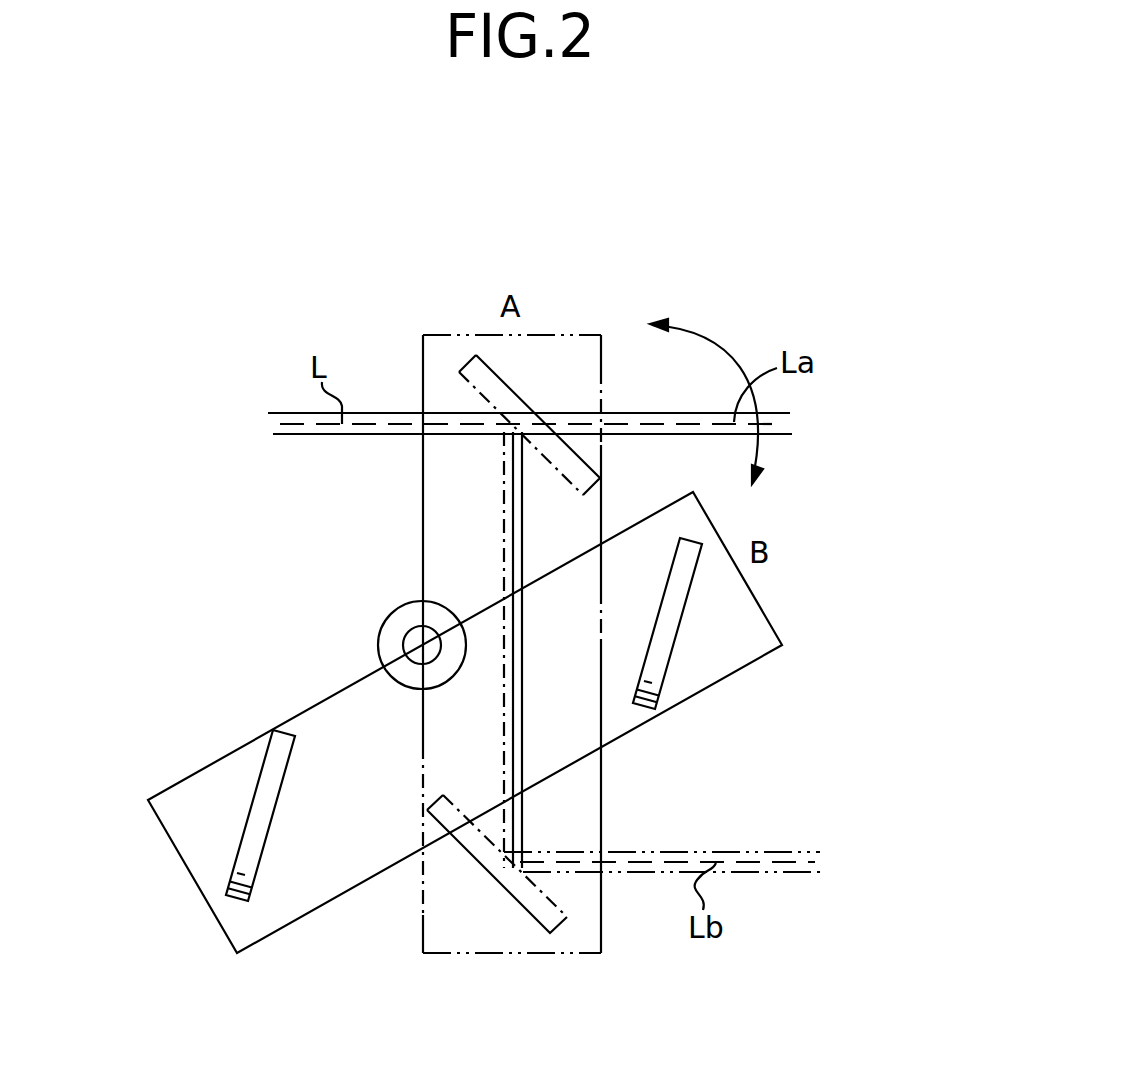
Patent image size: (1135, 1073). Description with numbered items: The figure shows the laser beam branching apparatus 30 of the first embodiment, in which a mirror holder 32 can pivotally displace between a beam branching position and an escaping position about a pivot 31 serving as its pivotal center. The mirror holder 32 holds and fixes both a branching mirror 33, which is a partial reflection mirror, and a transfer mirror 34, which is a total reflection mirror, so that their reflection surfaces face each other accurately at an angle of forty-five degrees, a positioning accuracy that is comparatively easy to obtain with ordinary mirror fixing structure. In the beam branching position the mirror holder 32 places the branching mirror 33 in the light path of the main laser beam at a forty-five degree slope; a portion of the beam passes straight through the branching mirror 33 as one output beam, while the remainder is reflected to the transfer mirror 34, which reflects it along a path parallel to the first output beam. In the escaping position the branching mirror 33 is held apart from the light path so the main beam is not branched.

The laser beam branching apparatus 30 is at (504, 706).
The pivot 31 is at (407, 637).
The mirror holder 32 is at (740, 622).
The branching mirror 33 is at (667, 643).
The transfer mirror 34 is at (255, 842).